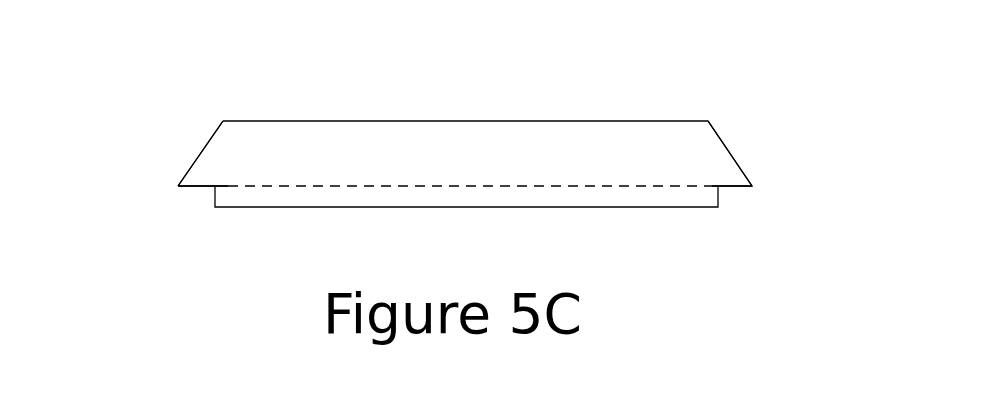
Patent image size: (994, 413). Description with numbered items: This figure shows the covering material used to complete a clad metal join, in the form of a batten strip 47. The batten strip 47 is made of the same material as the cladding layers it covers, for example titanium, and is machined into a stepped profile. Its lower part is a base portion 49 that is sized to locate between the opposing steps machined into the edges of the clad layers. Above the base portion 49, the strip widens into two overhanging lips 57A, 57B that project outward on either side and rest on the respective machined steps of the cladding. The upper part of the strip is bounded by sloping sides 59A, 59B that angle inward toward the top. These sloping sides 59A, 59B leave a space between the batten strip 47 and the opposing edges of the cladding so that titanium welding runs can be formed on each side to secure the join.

The batten strip 47 is at (563, 93).
The base portion 49 is at (298, 195).
The overhanging lip 57A is at (193, 186).
The overhanging lip 57B is at (735, 186).
The sloping side 59A is at (205, 145).
The sloping side 59B is at (733, 152).